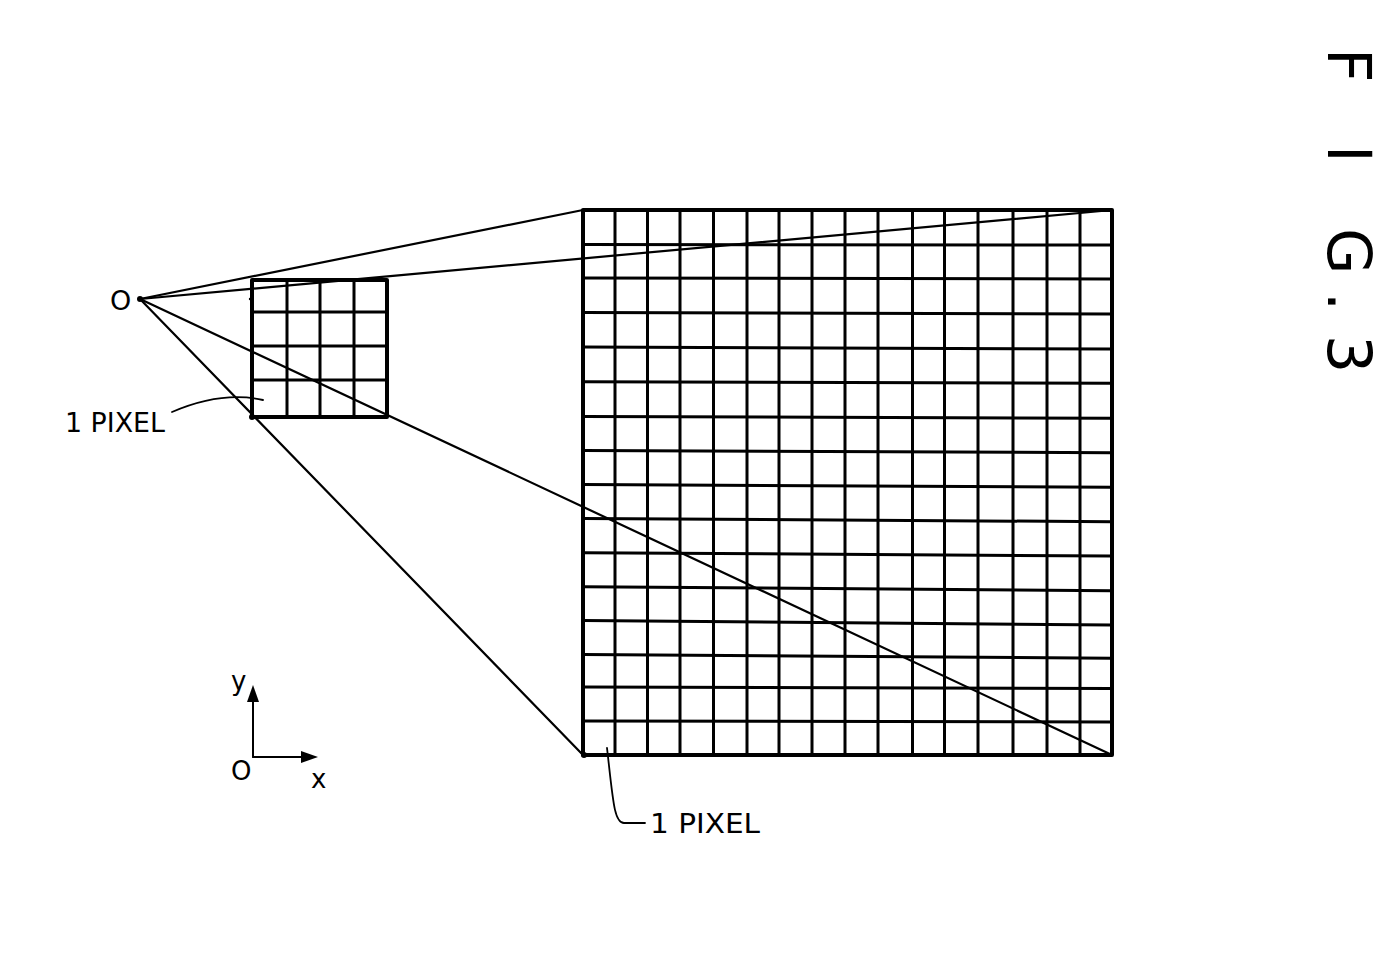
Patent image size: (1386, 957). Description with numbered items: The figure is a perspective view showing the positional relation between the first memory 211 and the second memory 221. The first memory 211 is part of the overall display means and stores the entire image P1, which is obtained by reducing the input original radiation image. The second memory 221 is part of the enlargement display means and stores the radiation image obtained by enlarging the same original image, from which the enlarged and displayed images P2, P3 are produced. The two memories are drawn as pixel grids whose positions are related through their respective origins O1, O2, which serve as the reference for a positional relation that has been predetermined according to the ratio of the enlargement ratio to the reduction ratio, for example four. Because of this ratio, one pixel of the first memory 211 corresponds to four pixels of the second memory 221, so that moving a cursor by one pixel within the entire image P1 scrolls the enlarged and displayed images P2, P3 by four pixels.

The first memory 211 is at (370, 280).
The second memory 221 is at (707, 202).
The entire image P1 is at (250, 299).
The enlarged and displayed image P2 is at (836, 210).
The enlarged and displayed image P3 is at (836, 210).
The origin O1 is at (253, 420).
The origin O2 is at (584, 757).